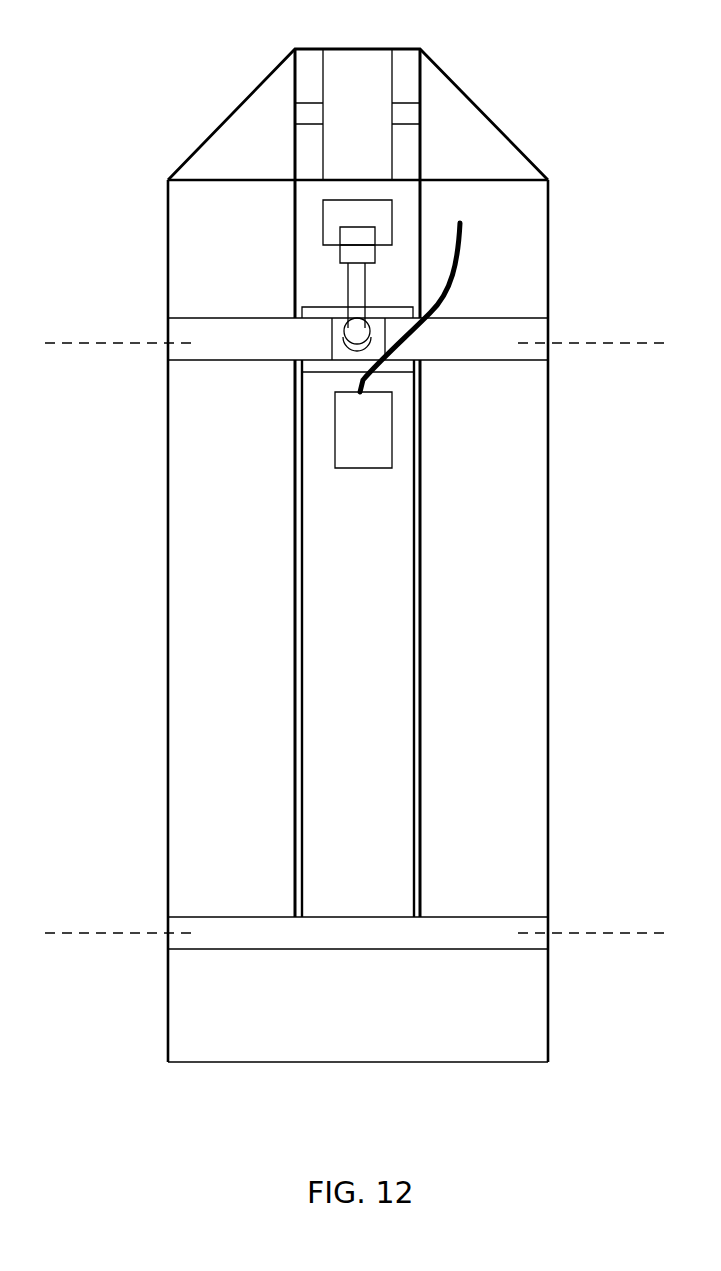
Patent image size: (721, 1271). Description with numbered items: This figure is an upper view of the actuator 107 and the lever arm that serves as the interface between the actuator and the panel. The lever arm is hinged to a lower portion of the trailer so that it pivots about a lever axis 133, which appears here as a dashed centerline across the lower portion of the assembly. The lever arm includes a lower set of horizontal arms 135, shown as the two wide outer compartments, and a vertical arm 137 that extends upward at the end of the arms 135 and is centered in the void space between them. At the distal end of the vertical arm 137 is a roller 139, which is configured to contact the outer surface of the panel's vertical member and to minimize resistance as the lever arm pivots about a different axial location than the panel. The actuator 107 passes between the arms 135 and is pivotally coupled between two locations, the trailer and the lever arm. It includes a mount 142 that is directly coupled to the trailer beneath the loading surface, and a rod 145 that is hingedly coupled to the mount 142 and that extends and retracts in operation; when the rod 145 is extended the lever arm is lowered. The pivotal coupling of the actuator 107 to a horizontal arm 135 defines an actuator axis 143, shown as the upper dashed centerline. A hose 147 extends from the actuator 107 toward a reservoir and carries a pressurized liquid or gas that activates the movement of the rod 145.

The actuator 107 is at (371, 635).
The lever axis 133 is at (70, 932).
The horizontal arms 135 is at (244, 610).
The vertical arm 137 is at (308, 47).
The roller 139 is at (374, 125).
The mount 142 is at (323, 223).
The actuator axis 143 is at (108, 342).
The rod 145 is at (348, 283).
The hose 147 is at (463, 282).